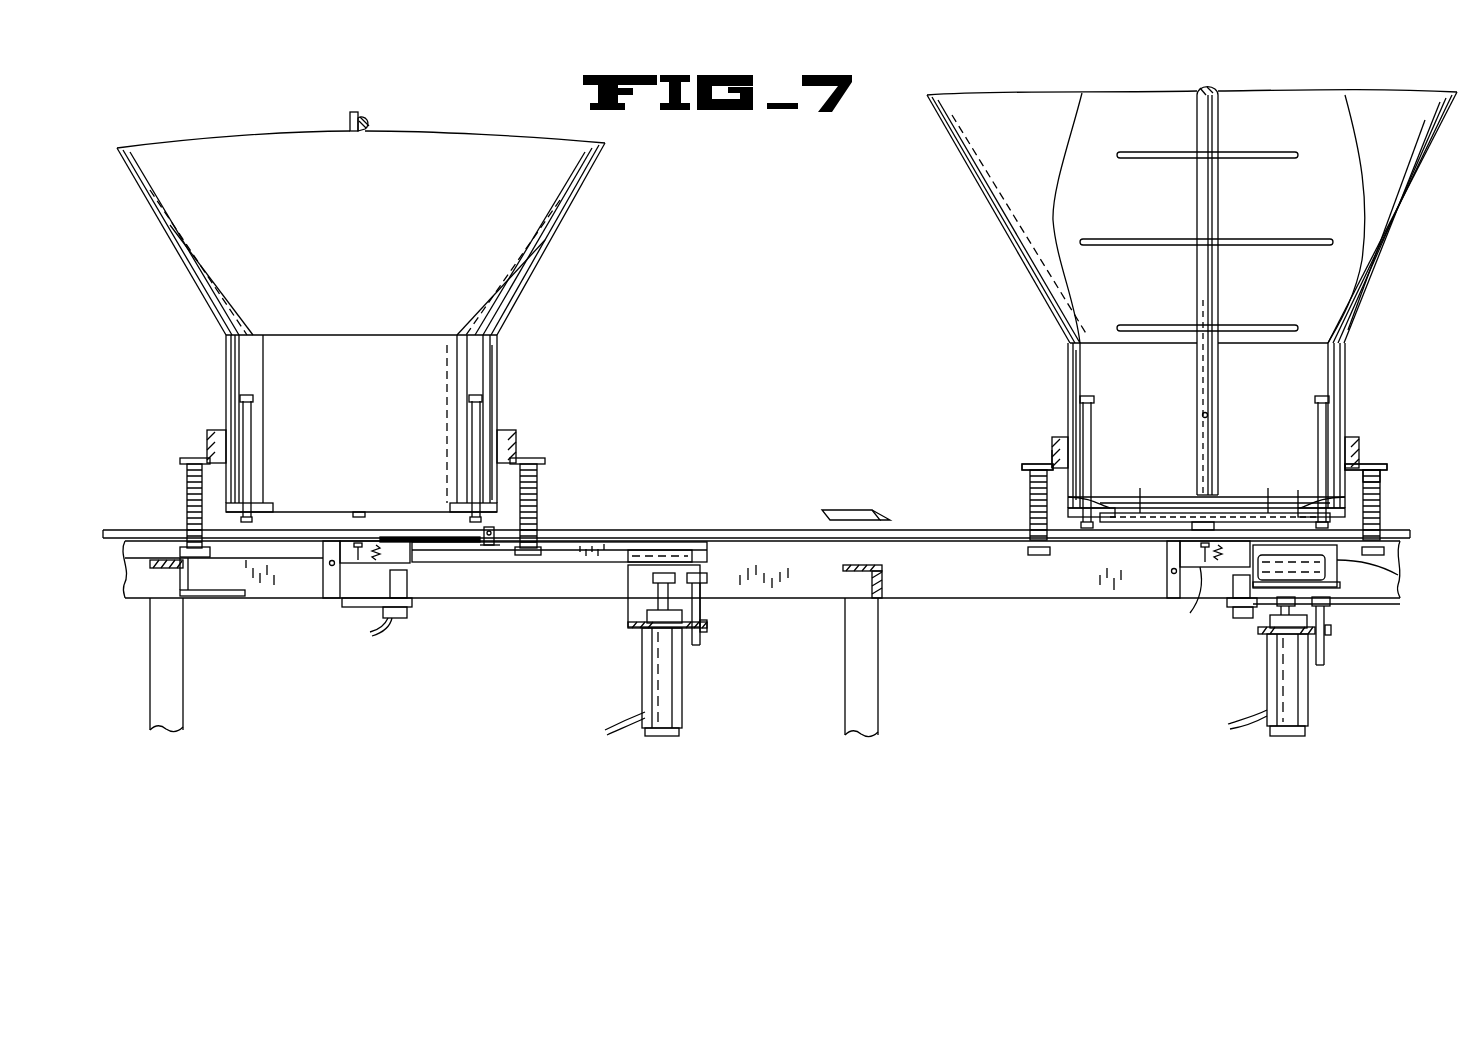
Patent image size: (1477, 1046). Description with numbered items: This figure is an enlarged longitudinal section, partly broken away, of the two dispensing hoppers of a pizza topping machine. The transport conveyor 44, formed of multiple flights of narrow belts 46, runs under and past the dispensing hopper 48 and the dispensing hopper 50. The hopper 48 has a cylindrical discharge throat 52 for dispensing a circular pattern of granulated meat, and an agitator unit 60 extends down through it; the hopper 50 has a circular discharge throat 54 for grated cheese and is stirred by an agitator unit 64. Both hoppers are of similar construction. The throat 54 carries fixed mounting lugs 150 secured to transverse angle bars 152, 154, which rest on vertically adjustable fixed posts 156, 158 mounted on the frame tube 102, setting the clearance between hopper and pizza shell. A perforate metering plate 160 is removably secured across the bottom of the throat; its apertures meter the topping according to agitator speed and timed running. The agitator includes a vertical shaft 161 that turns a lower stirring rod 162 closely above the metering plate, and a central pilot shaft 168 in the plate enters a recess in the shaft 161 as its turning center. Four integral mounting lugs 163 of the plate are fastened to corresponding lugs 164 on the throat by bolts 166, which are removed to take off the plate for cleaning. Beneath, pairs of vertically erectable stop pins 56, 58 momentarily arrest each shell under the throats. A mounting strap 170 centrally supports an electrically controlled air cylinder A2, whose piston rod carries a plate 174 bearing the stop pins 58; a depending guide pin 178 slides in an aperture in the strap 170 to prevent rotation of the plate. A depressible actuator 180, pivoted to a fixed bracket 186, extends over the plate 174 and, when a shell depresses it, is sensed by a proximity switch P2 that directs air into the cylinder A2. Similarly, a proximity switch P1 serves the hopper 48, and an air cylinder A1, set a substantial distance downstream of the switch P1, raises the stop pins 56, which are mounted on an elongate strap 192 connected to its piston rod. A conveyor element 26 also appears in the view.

The conveyor plate 26 is at (860, 518).
The transport conveyor 44 is at (630, 538).
The narrow belts 46 is at (313, 538).
The dispensing hopper 48 is at (378, 202).
The dispensing hopper 50 is at (1420, 114).
The cylindrical discharge throat 52 is at (501, 352).
The circular discharge throat 54 is at (1068, 356).
The stop pins 56 is at (487, 547).
The stop pins 58 is at (1380, 574).
The agitator unit 60 is at (378, 116).
The agitator unit 64 is at (1223, 110).
The frame tube 102 is at (765, 596).
The fixed mounting lugs 150 is at (224, 436).
The transverse angle bar 152 is at (1050, 450).
The transverse angle bar 154 is at (1362, 462).
The fixed post 156 is at (1028, 482).
The fixed post 158 is at (1380, 486).
The perforate metering plate 160 is at (383, 512).
The vertical shaft 161 is at (1197, 192).
The lower stirring rod 162 is at (1298, 495).
The integral mounting lugs 163 is at (195, 512).
The lugs 164 is at (1068, 508).
The bolts 166 is at (243, 406).
The central pilot shaft 168 is at (1245, 500).
The mounting strap 170 is at (1260, 632).
The plate 174 is at (1385, 597).
The depending guide pin 178 is at (1330, 622).
The depressible actuator 180 is at (1199, 612).
The fixed bracket 186 is at (1170, 562).
The elongate strap 192 is at (592, 565).
The proximity switch P1 is at (388, 580).
The proximity switch P2 is at (1238, 608).
The air cylinder A1 is at (655, 668).
The air cylinder A2 is at (1270, 675).